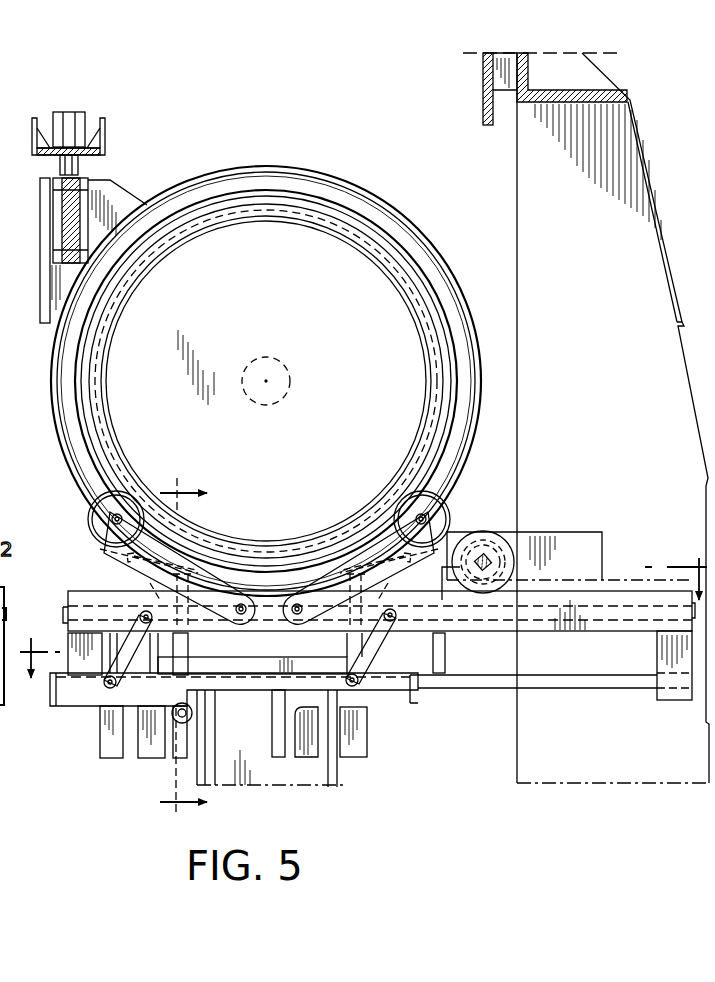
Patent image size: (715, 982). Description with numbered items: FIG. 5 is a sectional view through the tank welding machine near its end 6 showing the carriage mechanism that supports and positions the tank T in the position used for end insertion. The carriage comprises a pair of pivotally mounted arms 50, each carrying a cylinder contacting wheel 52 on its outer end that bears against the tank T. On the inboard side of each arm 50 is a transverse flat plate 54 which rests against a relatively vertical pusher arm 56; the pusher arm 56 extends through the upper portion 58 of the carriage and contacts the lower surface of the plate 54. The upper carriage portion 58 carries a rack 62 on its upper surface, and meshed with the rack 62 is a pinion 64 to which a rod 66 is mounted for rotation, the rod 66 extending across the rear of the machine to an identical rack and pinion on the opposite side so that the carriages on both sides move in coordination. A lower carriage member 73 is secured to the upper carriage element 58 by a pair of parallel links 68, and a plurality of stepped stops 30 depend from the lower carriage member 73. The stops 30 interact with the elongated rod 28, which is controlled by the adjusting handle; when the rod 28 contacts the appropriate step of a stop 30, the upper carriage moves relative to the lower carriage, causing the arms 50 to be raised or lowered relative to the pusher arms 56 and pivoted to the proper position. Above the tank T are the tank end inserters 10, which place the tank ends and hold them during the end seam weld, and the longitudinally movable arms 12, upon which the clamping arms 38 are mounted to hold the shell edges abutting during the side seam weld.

The tank end inserter 10 is at (341, 172).
The tank T is at (106, 334).
The clamping arm 38 is at (105, 143).
The cylinder contacting wheel 52 is at (103, 512).
The pivotally mounted arm 50 is at (107, 551).
The transverse flat plate 54 is at (126, 581).
The upper portion of the carriage 58 is at (614, 624).
The rack 62 is at (627, 580).
The pinion 64 is at (479, 536).
The rod 66 is at (492, 556).
The pusher arm 56 is at (186, 643).
The parallel link 68 is at (122, 657).
The lower carriage member 73 is at (83, 700).
The stop 30 is at (147, 753).
The rod 28 is at (193, 716).
The longitudinally movable arm 12 is at (177, 649).
The end 6 is at (363, 606).